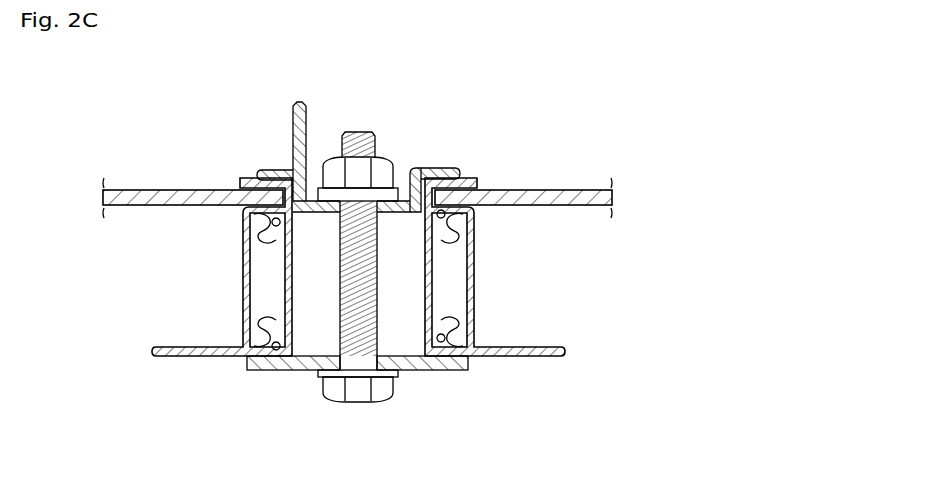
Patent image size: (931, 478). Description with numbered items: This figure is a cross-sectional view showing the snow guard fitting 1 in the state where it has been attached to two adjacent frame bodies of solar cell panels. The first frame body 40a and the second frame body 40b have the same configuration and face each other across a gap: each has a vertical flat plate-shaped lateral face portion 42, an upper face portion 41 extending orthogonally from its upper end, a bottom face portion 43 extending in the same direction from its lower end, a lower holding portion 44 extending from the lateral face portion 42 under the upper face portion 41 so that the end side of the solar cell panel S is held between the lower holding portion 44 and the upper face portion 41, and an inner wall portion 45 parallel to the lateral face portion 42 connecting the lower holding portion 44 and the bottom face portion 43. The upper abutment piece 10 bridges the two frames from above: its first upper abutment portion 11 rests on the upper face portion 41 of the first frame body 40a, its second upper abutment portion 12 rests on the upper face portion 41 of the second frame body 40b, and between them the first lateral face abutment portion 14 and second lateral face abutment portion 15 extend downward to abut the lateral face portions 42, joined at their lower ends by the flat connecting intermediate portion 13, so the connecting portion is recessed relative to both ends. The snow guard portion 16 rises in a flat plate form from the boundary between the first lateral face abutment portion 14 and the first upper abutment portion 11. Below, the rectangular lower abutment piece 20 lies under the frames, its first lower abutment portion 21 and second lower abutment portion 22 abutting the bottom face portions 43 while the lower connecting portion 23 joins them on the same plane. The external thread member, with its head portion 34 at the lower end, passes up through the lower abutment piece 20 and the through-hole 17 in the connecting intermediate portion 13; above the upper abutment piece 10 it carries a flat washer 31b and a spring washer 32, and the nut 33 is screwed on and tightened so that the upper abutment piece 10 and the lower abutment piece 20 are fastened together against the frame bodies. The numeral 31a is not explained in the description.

The snow guard fitting 1 is at (451, 60).
The solar cell panel S is at (111, 189).
The upper abutment piece 10 is at (212, 109).
The first upper abutment portion 11 is at (289, 169).
The second upper abutment portion 12 is at (433, 168).
The connecting intermediate portion 13 is at (409, 190).
The first lateral face abutment portion 14 is at (304, 172).
The second lateral face abutment portion 15 is at (412, 198).
The snow guard portion 16 is at (291, 108).
The through-hole 17 is at (327, 192).
The lower abutment piece 20 is at (469, 399).
The first lower abutment portion 21 is at (247, 362).
The second lower abutment portion 22 is at (468, 363).
The lower connecting portion 23 is at (331, 354).
The lower bolt shaft portion with washer 31a is at (320, 374).
The flat washer 31b is at (380, 201).
The spring washer 32 is at (336, 204).
The nut 33 is at (383, 166).
The head portion 34 is at (322, 393).
The first frame body 40a is at (148, 276).
The second frame body 40b is at (539, 264).
The upper face portion 41 is at (244, 182).
The lateral face portion 42 is at (285, 276).
The bottom face portion 43 is at (162, 357).
The lower holding portion 44 is at (258, 232).
The inner wall portion 45 is at (245, 320).